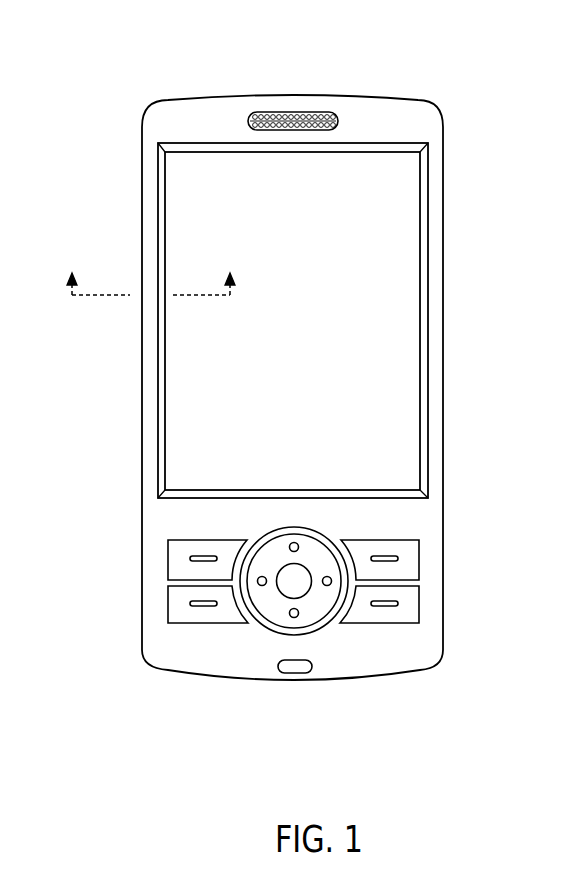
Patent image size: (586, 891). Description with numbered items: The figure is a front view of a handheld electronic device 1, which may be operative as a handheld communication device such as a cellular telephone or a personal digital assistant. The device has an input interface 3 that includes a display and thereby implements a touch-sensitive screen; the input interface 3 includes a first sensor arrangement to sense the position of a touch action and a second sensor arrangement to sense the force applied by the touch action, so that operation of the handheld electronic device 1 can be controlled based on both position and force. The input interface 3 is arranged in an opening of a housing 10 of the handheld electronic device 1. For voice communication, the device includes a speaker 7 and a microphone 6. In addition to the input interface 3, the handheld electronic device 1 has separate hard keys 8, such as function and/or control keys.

The handheld electronic device 1 is at (153, 93).
The input interface 3 is at (410, 193).
The microphone 6 is at (298, 673).
The speaker 7 is at (293, 111).
The hard keys 8 is at (213, 657).
The housing 10 is at (382, 662).